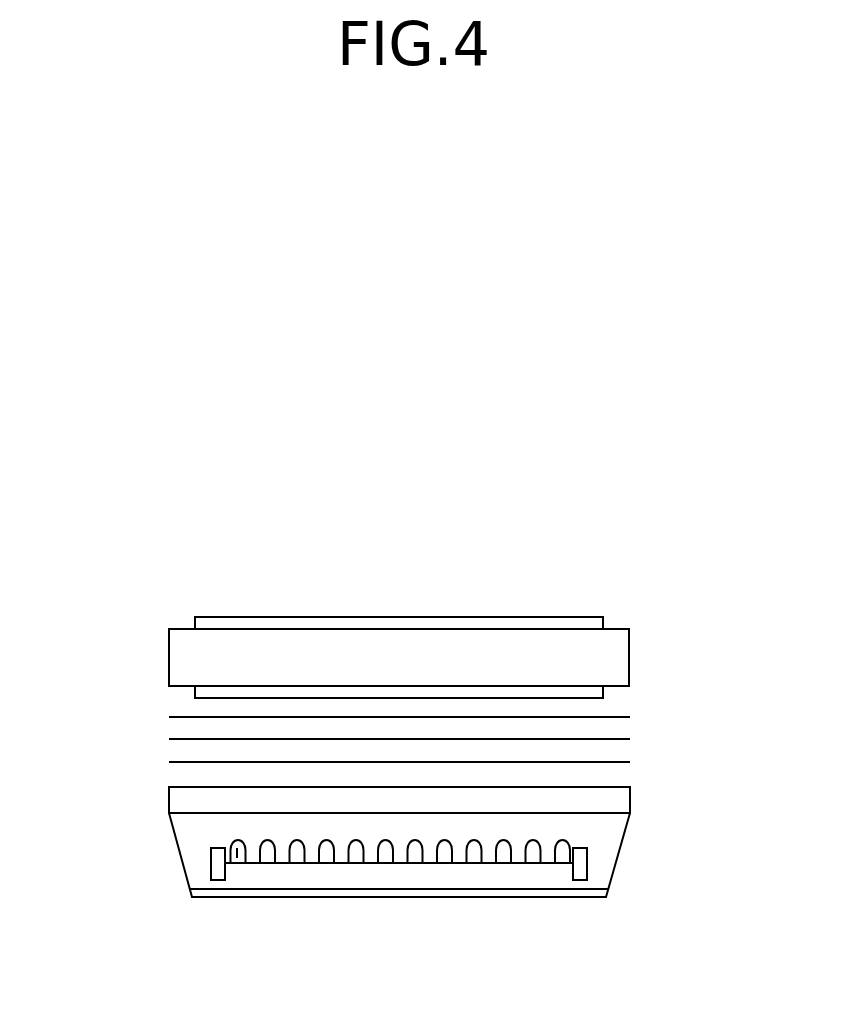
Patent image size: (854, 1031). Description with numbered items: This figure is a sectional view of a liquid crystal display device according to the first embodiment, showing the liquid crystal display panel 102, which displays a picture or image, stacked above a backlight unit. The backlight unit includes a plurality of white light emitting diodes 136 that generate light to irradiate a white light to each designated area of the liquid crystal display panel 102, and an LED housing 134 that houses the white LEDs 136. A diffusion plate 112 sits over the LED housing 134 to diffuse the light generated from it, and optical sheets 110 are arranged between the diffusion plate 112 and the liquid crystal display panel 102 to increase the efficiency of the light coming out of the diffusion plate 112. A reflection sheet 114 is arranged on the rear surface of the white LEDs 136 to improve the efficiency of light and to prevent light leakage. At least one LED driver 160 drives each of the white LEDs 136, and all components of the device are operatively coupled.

The liquid crystal display panel 102 is at (615, 657).
The optical sheets 110 is at (645, 717).
The diffusion plate 112 is at (615, 800).
The LED housing 134 is at (620, 860).
The reflection sheet 114 is at (307, 893).
The LED driver 160 is at (218, 862).
The white light emitting diodes 136 is at (238, 855).